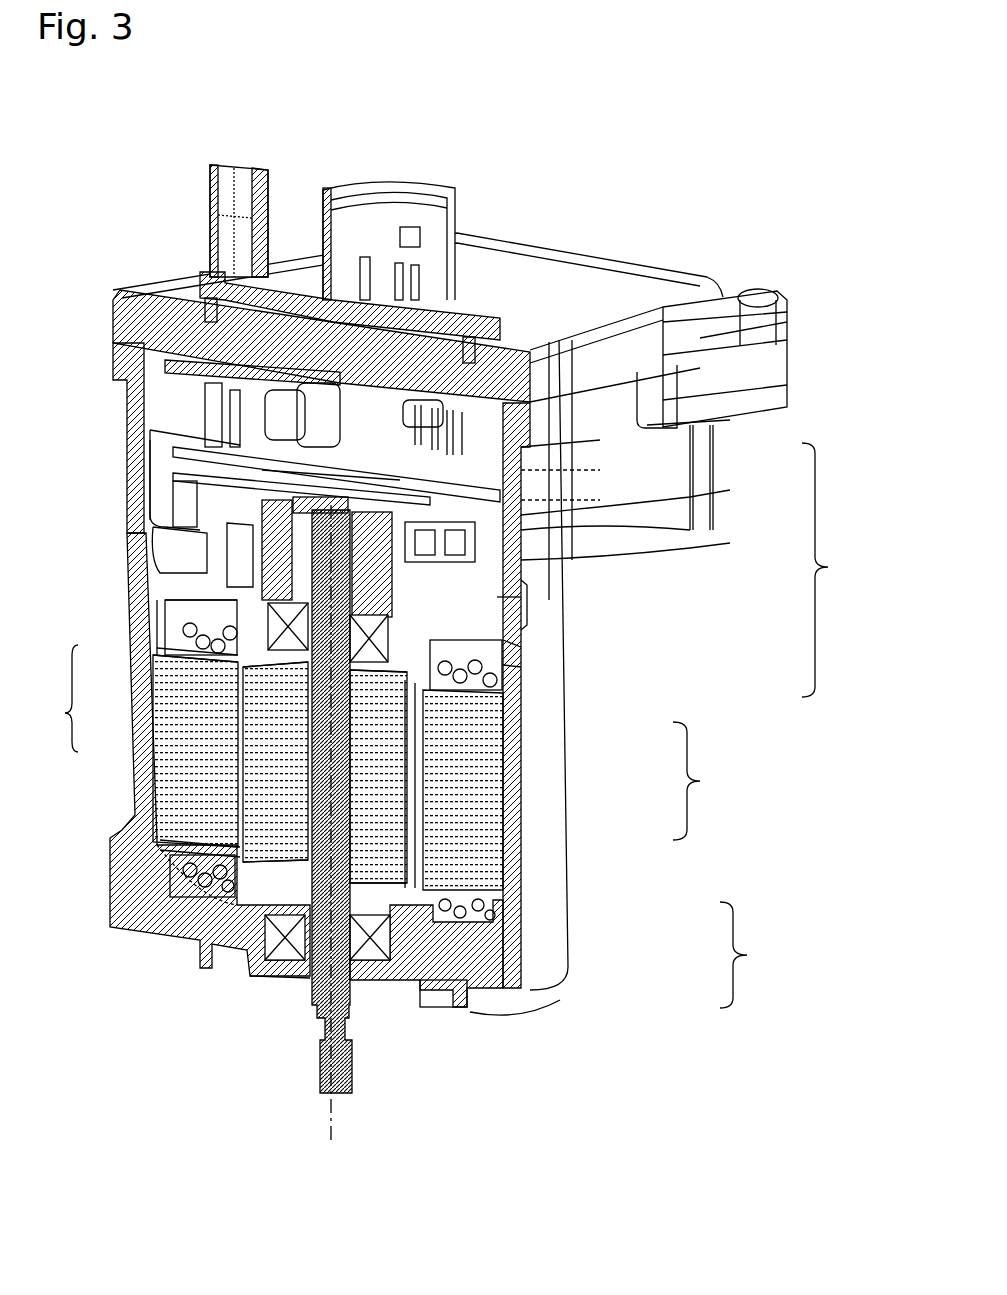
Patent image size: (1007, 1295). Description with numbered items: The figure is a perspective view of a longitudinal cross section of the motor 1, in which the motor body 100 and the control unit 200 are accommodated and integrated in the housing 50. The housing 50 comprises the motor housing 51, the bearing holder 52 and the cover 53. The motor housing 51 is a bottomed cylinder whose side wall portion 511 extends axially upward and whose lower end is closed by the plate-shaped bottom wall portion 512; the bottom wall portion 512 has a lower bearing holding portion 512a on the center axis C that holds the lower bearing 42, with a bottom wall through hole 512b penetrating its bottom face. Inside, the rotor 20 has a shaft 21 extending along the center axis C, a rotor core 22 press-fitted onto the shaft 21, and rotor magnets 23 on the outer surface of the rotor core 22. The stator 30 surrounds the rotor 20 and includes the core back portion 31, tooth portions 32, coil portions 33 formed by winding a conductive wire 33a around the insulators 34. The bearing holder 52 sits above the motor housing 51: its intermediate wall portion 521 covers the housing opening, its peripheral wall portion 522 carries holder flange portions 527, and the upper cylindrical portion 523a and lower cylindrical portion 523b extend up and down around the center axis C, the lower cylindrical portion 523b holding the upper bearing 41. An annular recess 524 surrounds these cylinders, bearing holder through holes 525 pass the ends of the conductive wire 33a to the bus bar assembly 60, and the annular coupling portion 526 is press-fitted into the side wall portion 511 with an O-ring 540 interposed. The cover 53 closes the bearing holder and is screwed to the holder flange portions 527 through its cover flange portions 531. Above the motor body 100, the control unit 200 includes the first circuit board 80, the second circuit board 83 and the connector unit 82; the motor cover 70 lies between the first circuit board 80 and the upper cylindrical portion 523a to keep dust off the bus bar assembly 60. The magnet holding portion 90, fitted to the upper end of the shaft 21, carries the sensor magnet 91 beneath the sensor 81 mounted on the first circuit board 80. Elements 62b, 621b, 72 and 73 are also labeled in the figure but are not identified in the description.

The motor 1 is at (160, 185).
The rotor 20 is at (707, 781).
The shaft 21 is at (510, 738).
The rotor core 22 is at (512, 775).
The rotor magnet 23 is at (517, 795).
The stator 30 is at (52, 698).
The core back portion 31 is at (170, 718).
The tooth portion 32 is at (200, 750).
The coil portion 33 is at (160, 677).
The conductive wire 33a is at (150, 562).
The insulator 34 is at (160, 620).
The upper bearing 41 is at (150, 600).
The lower bearing 42 is at (380, 993).
The housing 50 is at (623, 245).
The motor housing 51 is at (755, 955).
The side wall portion 511 is at (527, 835).
The bottom wall portion 512 is at (470, 1017).
The lower bearing holding portion 512a is at (420, 997).
The bottom wall through hole 512b is at (303, 983).
The bearing holder 52 is at (834, 570).
The intermediate wall portion 521 is at (560, 543).
The peripheral wall portion 522 is at (527, 533).
The upper cylindrical portion 523a is at (537, 517).
The lower cylindrical portion 523b is at (520, 667).
The recess 524 is at (497, 597).
The bearing holder through hole 525 is at (513, 647).
The annular coupling portion 526 is at (523, 607).
The holder flange portion 527 is at (742, 400).
The cover 53 is at (633, 283).
The cover flange portion 531 is at (700, 323).
The O-ring 540 is at (130, 552).
The bus bar assembly 60 is at (205, 500).
The bus bar 62b is at (180, 503).
The bus bar terminal 621b is at (175, 528).
The motor cover 70 is at (230, 490).
The board support 72 is at (245, 485).
The sensor magnet 73 is at (398, 470).
The first circuit board 80 is at (235, 468).
The sensor 81 is at (338, 483).
The connector unit 82 is at (374, 290).
The second circuit board 83 is at (277, 258).
The magnet holding portion 90 is at (280, 480).
The sensor magnet 91 is at (300, 492).
The motor body 100 is at (127, 932).
The control unit 200 is at (497, 253).
The center axis C is at (333, 1127).